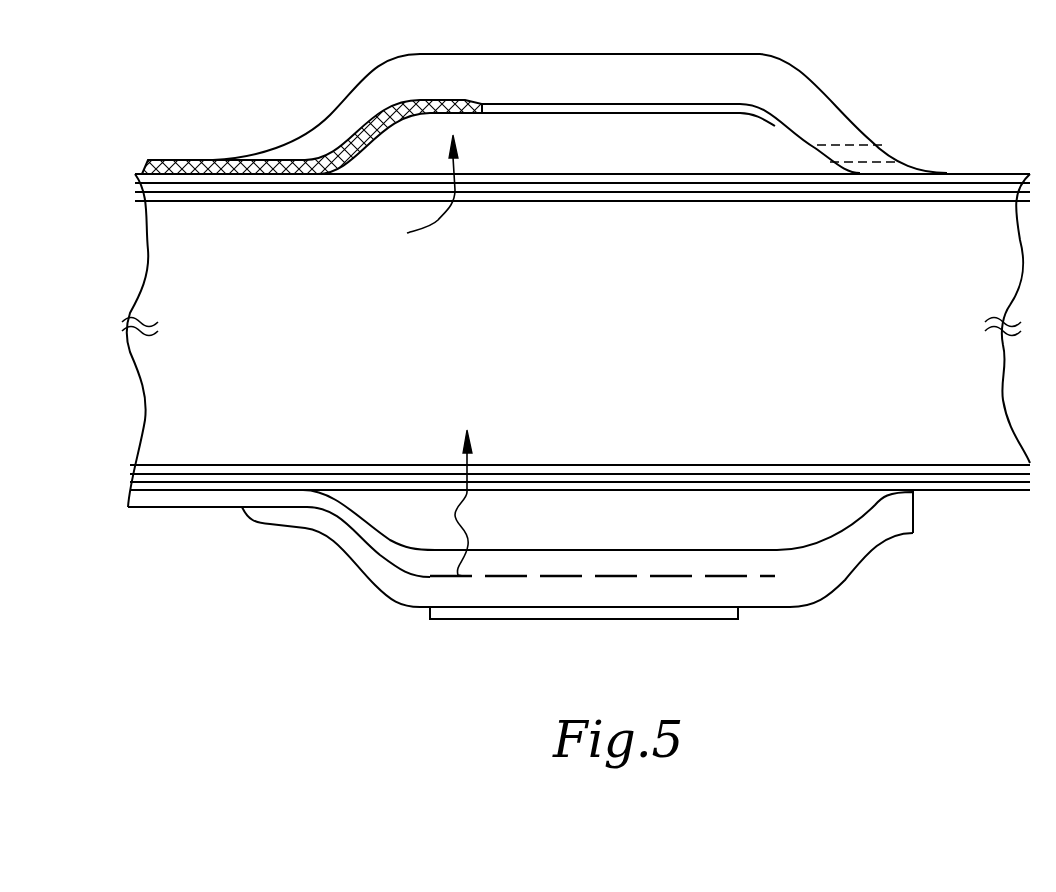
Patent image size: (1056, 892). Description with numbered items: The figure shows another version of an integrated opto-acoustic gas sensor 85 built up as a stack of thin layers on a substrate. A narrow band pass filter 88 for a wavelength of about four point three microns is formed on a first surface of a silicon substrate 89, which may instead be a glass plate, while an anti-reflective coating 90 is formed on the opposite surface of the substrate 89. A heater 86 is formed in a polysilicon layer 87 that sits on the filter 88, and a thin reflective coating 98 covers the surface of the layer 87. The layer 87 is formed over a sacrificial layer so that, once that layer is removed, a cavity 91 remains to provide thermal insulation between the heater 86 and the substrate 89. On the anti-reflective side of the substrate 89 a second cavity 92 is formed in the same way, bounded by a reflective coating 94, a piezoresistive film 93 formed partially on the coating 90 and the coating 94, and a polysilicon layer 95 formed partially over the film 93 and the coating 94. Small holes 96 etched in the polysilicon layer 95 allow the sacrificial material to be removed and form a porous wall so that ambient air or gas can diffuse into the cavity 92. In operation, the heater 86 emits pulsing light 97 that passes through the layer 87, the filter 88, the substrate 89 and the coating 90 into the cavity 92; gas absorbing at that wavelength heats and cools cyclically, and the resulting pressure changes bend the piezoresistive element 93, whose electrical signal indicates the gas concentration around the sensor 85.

The sensor 85 is at (232, 104).
The heater 86 is at (477, 576).
The polysilicon layer 87 is at (797, 597).
The narrow band pass filter 88 is at (700, 465).
The silicon substrate 89 is at (610, 338).
The anti-reflective coating 90 is at (778, 203).
The cavity 91 is at (770, 535).
The cavity 92 is at (523, 168).
The piezoresistive film 93 is at (212, 160).
The reflective coating 94 is at (652, 114).
The polysilicon layer 95 is at (592, 97).
The holes 96 is at (870, 160).
The light 97 is at (470, 462).
The reflective coating 98 is at (700, 619).